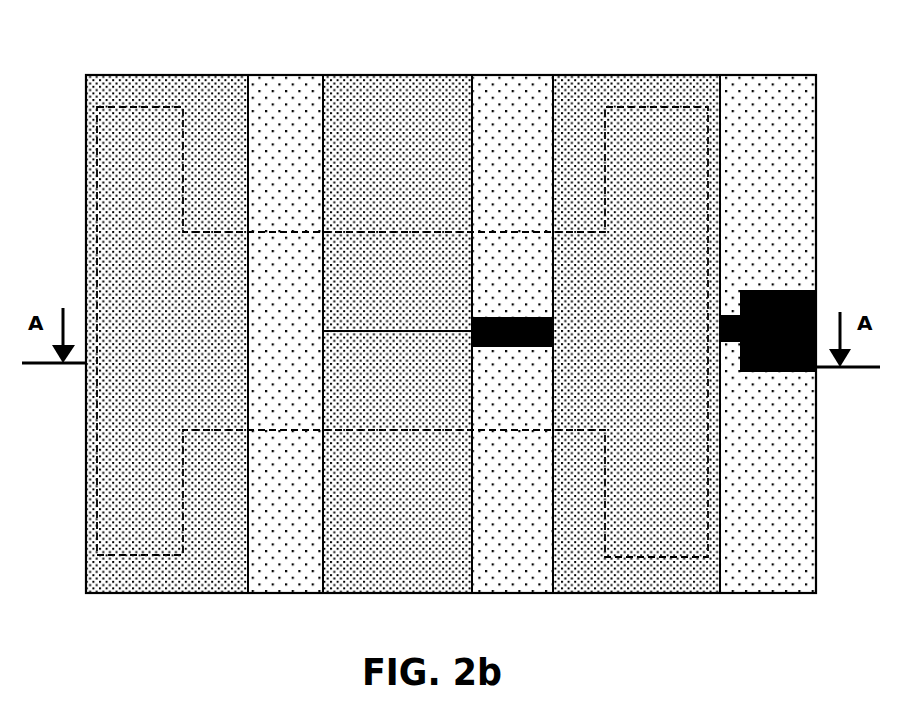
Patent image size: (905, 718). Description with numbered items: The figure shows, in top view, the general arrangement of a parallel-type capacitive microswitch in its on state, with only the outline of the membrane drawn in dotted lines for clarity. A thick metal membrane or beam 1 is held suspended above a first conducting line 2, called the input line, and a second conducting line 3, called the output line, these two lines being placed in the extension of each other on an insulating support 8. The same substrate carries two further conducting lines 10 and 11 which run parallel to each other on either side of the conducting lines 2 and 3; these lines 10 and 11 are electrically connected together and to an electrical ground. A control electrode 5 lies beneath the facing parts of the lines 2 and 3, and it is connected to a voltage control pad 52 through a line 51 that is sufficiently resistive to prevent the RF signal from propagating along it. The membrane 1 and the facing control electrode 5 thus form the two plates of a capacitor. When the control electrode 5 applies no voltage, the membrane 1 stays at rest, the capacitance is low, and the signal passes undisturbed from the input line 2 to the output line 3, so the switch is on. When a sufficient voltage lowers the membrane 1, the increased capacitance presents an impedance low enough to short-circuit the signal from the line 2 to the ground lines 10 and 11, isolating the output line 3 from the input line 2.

The metal membrane 1 is at (700, 183).
The first conducting line 2 is at (455, 572).
The second conducting line 3 is at (415, 113).
The control electrode 5 is at (350, 358).
The insulating support 8 is at (508, 117).
The conducting line 10 is at (115, 545).
The conducting line 11 is at (693, 83).
The line 51 is at (503, 314).
The voltage control pad 52 is at (765, 373).